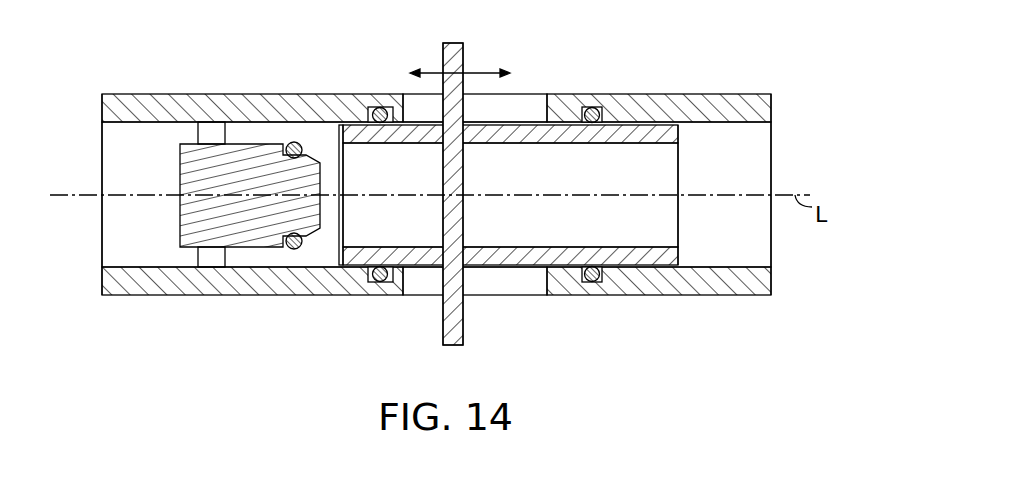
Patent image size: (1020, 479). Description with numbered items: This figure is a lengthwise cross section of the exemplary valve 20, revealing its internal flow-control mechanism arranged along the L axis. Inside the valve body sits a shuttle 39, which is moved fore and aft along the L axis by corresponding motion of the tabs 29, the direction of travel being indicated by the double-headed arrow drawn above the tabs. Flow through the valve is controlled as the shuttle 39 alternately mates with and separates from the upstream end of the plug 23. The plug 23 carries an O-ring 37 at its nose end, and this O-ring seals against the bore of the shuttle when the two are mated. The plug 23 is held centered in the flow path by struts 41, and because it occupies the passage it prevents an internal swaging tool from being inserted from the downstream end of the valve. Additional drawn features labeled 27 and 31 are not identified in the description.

The valve 20 is at (796, 86).
The plug 23 is at (176, 220).
The cylinder chamber 27 is at (258, 133).
The tabs 29 is at (463, 66).
The inner tube 31 is at (333, 142).
The O-ring 37 is at (300, 143).
The shuttle 39 is at (492, 143).
The struts 41 is at (198, 131).